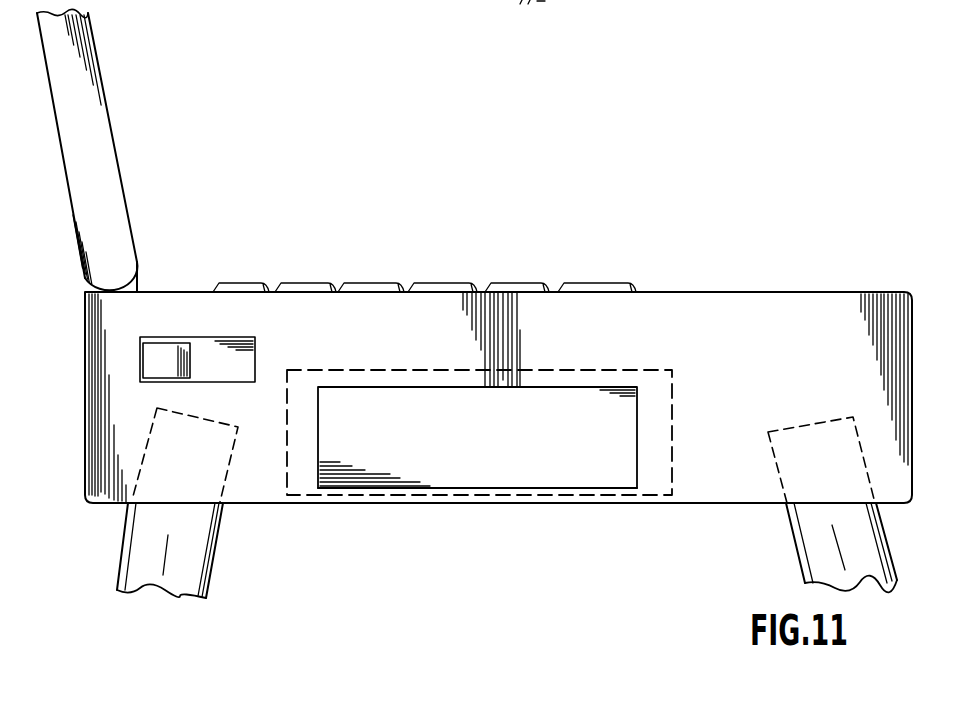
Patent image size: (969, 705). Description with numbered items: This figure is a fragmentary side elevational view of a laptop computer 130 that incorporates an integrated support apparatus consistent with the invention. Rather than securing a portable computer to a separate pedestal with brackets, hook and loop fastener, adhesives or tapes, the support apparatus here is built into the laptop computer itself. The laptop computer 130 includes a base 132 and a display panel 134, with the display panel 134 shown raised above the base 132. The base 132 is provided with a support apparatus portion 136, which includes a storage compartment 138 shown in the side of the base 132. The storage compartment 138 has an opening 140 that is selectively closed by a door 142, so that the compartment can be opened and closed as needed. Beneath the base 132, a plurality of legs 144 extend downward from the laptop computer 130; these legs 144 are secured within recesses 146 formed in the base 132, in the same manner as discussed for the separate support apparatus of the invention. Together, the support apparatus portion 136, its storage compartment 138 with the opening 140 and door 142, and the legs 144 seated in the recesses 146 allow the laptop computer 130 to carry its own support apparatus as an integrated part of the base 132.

The laptop computer 130 is at (817, 324).
The base 132 is at (672, 312).
The display panel 134 is at (111, 172).
The support apparatus portion 136 is at (105, 482).
The storage compartment 138 is at (673, 422).
The opening 140 is at (489, 488).
The door 142 is at (508, 441).
The legs 144 is at (217, 556).
The recesses 146 is at (798, 423).